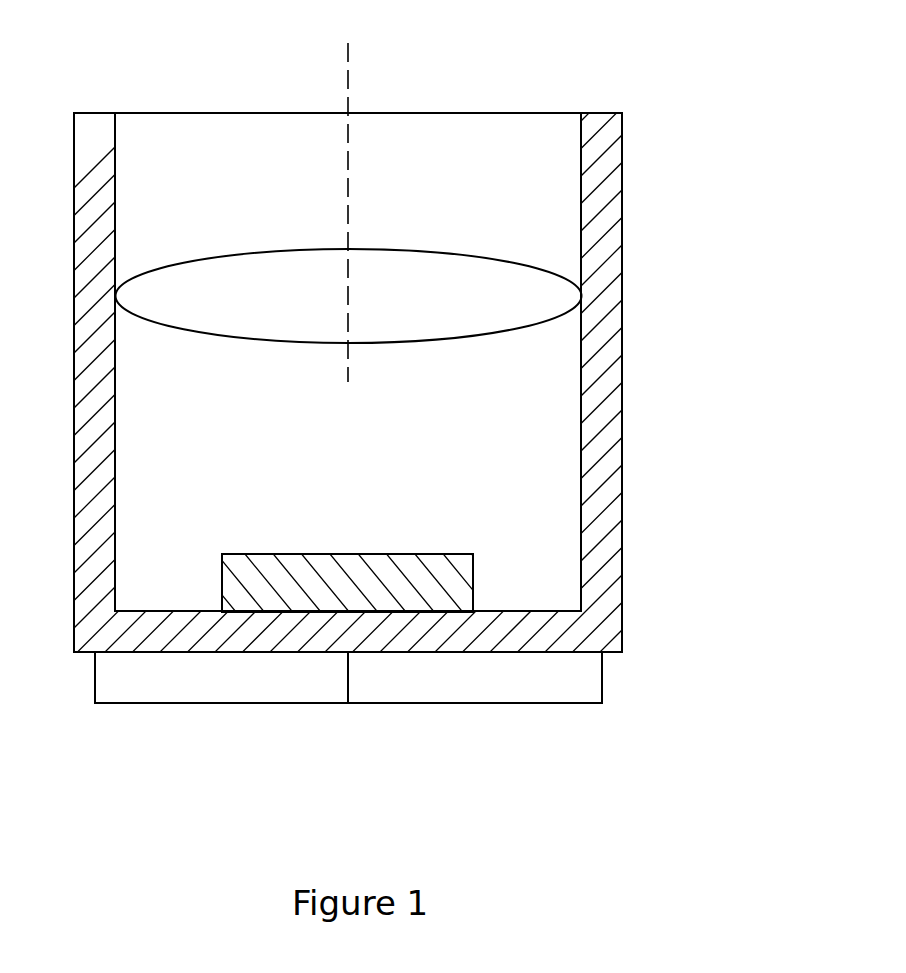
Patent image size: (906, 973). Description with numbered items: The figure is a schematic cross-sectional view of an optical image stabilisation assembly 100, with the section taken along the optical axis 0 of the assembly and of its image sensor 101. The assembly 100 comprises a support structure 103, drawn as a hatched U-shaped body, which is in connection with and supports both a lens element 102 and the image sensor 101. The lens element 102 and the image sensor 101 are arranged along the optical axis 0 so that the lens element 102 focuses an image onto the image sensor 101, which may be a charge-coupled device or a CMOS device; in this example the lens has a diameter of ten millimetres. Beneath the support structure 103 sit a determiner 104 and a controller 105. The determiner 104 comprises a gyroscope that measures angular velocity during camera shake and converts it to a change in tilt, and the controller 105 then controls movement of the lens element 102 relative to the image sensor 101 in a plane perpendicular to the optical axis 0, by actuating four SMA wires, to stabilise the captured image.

The optical axis 0 is at (348, 197).
The optical image stabilisation assembly 100 is at (450, 155).
The image sensor 101 is at (285, 554).
The lens element 102 is at (240, 275).
The support structure 103 is at (622, 198).
The determiner 104 is at (490, 704).
The controller 105 is at (215, 704).